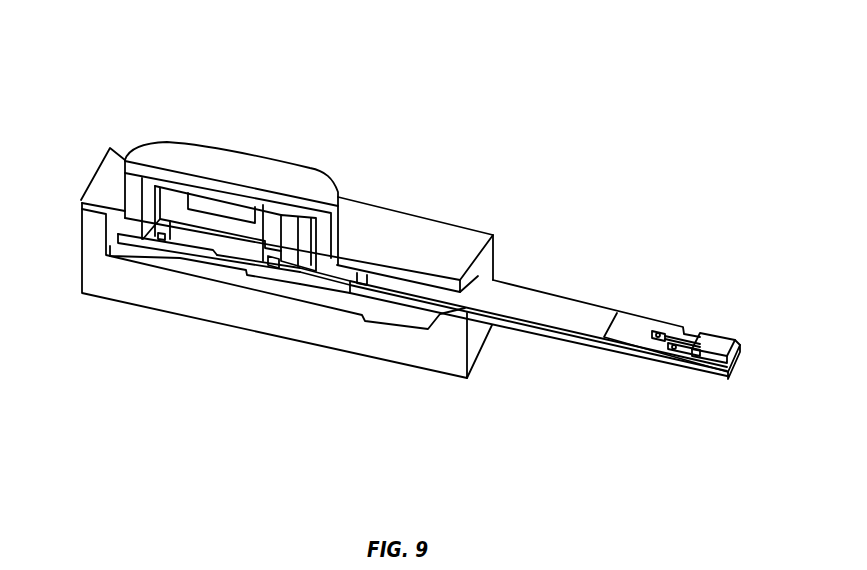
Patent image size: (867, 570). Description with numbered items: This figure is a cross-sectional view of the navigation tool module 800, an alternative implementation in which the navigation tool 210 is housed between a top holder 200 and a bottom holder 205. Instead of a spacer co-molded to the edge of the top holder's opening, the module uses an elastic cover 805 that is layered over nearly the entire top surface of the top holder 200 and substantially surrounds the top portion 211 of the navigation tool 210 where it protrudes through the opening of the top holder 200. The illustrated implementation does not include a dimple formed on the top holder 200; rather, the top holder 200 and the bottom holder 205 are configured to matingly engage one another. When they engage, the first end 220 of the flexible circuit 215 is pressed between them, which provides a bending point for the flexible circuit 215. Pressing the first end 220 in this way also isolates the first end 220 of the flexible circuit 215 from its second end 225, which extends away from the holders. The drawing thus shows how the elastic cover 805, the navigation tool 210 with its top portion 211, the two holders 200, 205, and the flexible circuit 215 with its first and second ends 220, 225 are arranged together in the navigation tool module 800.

The navigation tool module 800 is at (194, 69).
The elastic cover 805 is at (88, 196).
The navigation tool 210 is at (249, 150).
The top portion 211 is at (132, 185).
The top holder 200 is at (490, 267).
The bottom holder 205 is at (298, 330).
The flexible circuit 215 is at (585, 300).
The first end 220 is at (400, 302).
The second end 225 is at (724, 364).